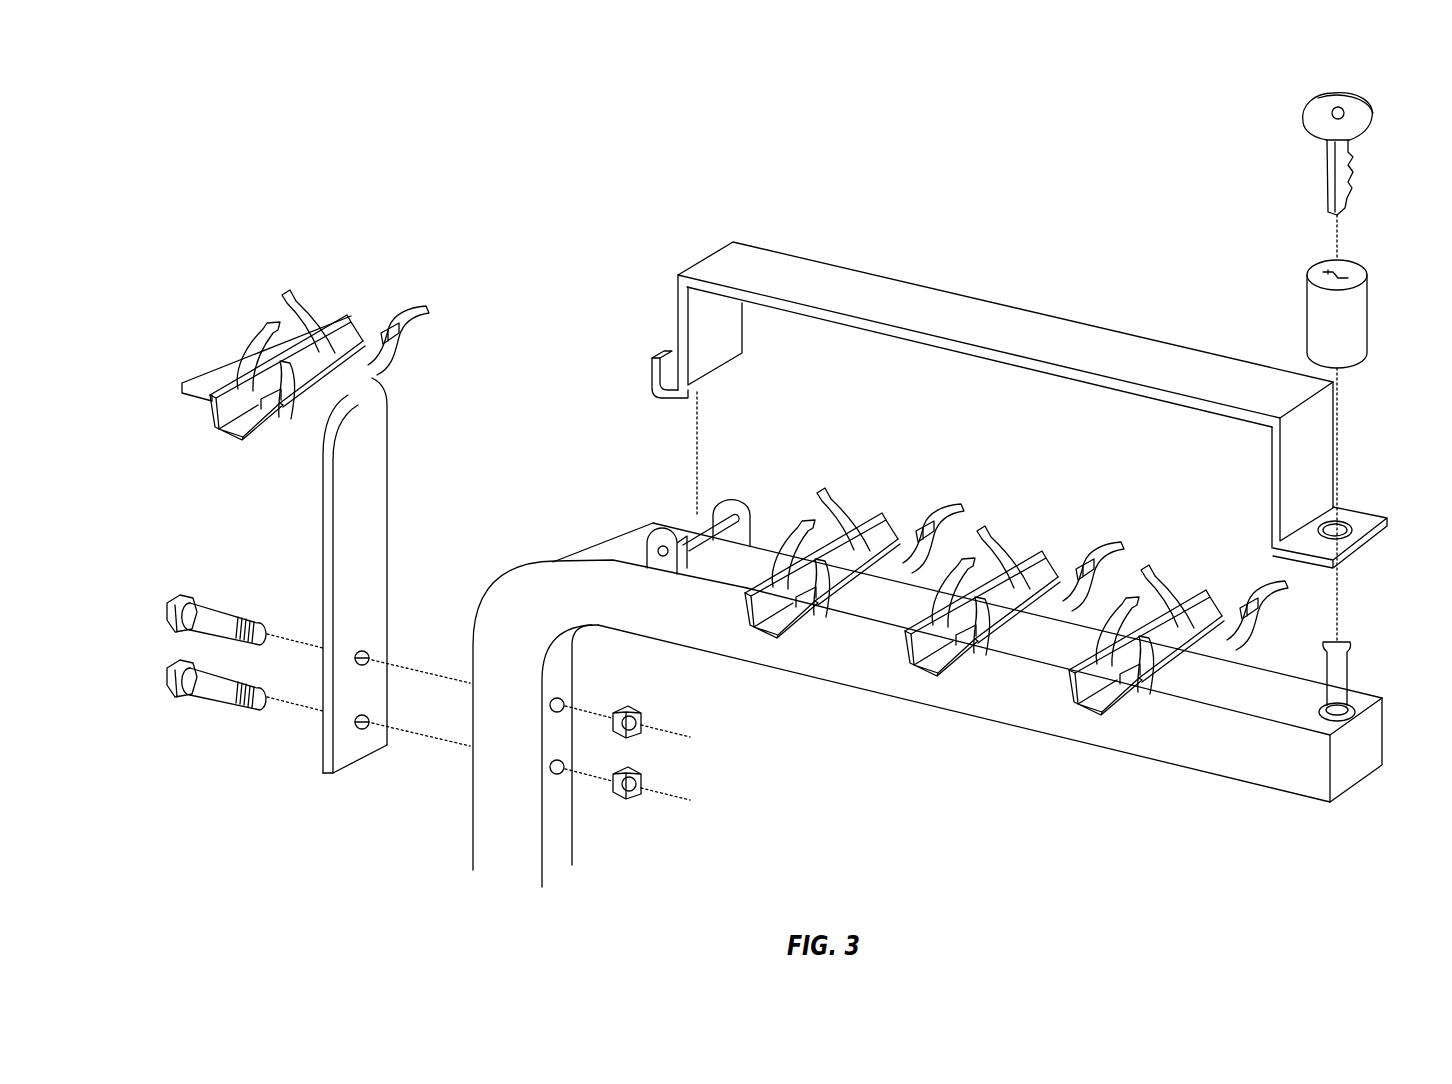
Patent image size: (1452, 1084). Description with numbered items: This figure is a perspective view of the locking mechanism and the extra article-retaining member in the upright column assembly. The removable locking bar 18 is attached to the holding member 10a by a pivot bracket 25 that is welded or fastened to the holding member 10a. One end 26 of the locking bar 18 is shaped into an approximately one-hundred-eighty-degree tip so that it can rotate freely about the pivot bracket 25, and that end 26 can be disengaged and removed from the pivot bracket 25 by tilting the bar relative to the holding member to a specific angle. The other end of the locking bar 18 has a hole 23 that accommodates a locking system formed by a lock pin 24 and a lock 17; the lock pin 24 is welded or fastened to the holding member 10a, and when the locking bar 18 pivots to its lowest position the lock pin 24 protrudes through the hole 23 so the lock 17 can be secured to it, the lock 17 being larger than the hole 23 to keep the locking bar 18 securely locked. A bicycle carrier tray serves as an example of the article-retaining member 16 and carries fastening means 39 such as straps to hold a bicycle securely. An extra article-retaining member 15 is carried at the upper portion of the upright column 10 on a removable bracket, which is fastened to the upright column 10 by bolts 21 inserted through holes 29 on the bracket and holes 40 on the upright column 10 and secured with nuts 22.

The upright column 10 is at (572, 847).
The holding member 10a is at (1005, 730).
The extra article-retaining member 15 is at (347, 318).
The article-retaining member 16 is at (875, 513).
The lock 17 is at (1370, 313).
The locking bar 18 is at (985, 318).
The bolts 21 is at (212, 700).
The nuts 22 is at (637, 797).
The hole 23 is at (1350, 523).
The lock pin 24 is at (1350, 642).
The pivot bracket 25 is at (688, 530).
The end of the locking bar 26 is at (672, 346).
The holes on the bracket 29 is at (364, 730).
The fastening means 39 is at (980, 535).
The holes on the upright column 40 is at (559, 775).